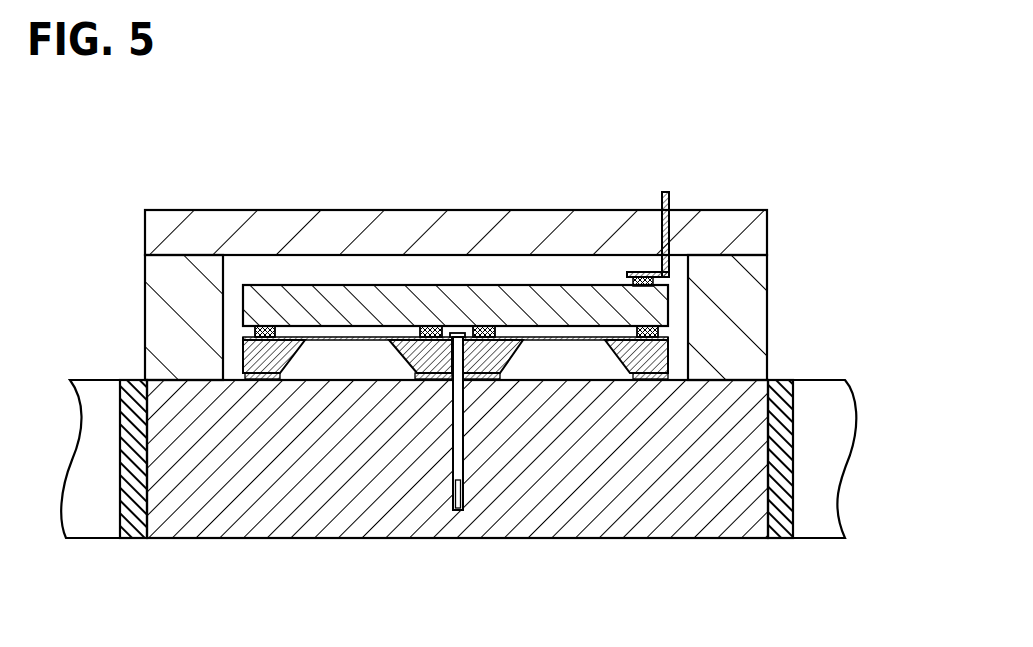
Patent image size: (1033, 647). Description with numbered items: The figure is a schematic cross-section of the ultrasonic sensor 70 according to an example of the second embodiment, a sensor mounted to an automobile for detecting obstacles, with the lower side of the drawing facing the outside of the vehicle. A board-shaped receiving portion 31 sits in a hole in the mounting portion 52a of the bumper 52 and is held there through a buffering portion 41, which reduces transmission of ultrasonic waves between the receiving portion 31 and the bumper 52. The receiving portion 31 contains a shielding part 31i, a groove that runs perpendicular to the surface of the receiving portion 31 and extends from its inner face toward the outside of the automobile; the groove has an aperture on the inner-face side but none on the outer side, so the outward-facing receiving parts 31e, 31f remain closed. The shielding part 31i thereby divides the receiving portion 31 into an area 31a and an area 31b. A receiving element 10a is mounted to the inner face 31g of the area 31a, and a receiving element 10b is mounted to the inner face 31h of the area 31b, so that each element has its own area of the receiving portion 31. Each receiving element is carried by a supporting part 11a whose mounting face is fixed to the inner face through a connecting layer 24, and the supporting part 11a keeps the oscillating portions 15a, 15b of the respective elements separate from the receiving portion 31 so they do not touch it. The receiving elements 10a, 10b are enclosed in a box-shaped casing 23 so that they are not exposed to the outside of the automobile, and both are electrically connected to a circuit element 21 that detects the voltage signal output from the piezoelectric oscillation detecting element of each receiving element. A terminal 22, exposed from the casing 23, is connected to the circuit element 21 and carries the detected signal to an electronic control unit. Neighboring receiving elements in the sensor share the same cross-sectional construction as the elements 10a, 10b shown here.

The electronic component module 70 is at (727, 160).
The casing 23 is at (486, 211).
The receiving element 10a is at (235, 346).
The receiving element 10b is at (672, 346).
The circuit element 21 is at (433, 297).
The terminal 22 is at (667, 193).
The supporting part 11a is at (240, 362).
The first electronic component 15a is at (342, 335).
The second electronic component 15b is at (565, 337).
The connecting layer 24 is at (263, 380).
The receiving portion 31 is at (480, 547).
The area 31a is at (222, 527).
The area 31b is at (667, 527).
The receiving part 31e is at (317, 538).
The receiving part 31f is at (587, 539).
The inner face 31g is at (358, 378).
The inner face 31h is at (588, 381).
The shielding part 31i is at (456, 484).
The buffering portion 41 is at (140, 538).
The bumper 52 is at (87, 528).
The mounting portion 52a is at (130, 538).